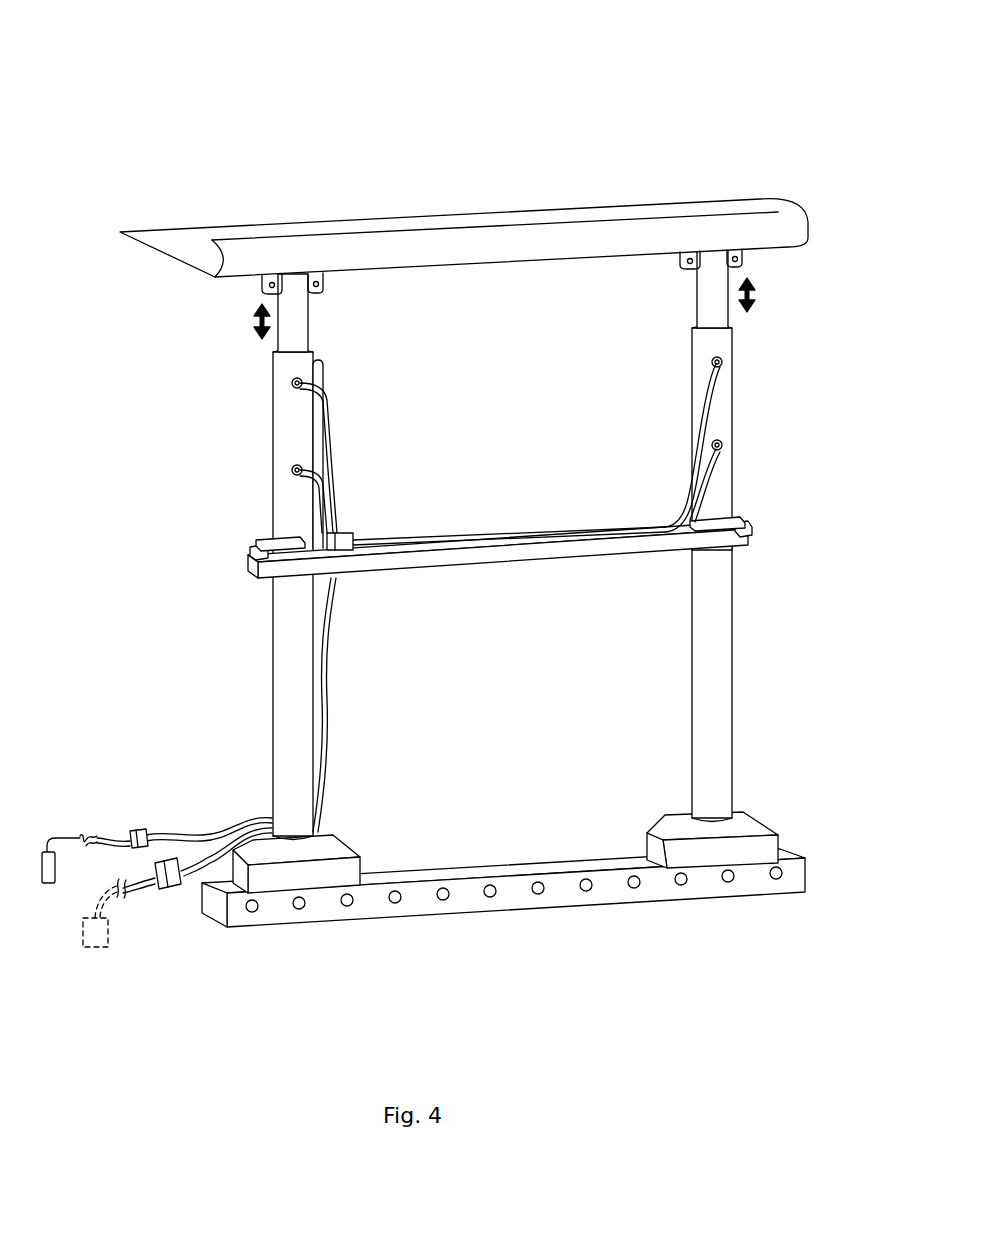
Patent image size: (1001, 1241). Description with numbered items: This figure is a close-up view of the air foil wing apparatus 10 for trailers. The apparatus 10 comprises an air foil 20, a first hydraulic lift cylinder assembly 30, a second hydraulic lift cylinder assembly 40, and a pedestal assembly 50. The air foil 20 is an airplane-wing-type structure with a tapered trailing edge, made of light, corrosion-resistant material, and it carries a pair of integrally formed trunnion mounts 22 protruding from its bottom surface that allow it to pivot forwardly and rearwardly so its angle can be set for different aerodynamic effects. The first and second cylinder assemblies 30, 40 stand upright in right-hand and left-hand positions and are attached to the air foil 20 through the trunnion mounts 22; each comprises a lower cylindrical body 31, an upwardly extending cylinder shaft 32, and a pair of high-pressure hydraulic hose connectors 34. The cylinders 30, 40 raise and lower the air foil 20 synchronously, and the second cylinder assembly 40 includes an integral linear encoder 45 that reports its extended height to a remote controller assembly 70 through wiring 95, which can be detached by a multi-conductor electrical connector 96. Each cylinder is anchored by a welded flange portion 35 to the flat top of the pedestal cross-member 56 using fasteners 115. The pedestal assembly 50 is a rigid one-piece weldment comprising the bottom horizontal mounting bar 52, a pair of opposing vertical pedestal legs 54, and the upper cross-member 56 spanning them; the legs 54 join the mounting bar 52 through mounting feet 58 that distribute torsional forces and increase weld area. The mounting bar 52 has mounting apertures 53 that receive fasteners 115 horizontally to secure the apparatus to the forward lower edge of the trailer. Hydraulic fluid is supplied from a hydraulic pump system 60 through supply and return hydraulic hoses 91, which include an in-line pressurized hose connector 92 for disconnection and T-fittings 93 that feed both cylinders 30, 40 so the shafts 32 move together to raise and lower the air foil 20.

The air foil wing apparatus 10 is at (95, 96).
The air foil 20 is at (327, 228).
The trunnion mounts 22 is at (682, 257).
The first hydraulic lift cylinder assembly 30 is at (665, 345).
The lower cylindrical body 31 is at (283, 497).
The cylinder shaft 32 is at (293, 308).
The high-pressure hydraulic hose connectors 34 is at (292, 467).
The integral flange portion 35 is at (262, 558).
The second hydraulic lift cylinder assembly 40 is at (193, 413).
The linear encoder device 45 is at (321, 391).
The pedestal assembly 50 is at (236, 656).
The mounting bar 52 is at (465, 905).
The mounting apertures 53 is at (683, 885).
The pedestal legs 54 is at (283, 742).
The pedestal cross-member 56 is at (479, 563).
The mounting feet 58 is at (655, 845).
The hydraulic pump system 60 is at (88, 948).
The remote controller assembly 70 is at (45, 886).
The hydraulic hoses 91 is at (333, 515).
The in-line pressurized hose connector 92 is at (165, 890).
The T-fittings 93 is at (350, 546).
The wiring 95 is at (324, 576).
The multi-conductor electrical connector 96 is at (143, 830).
The fasteners 115 is at (282, 548).